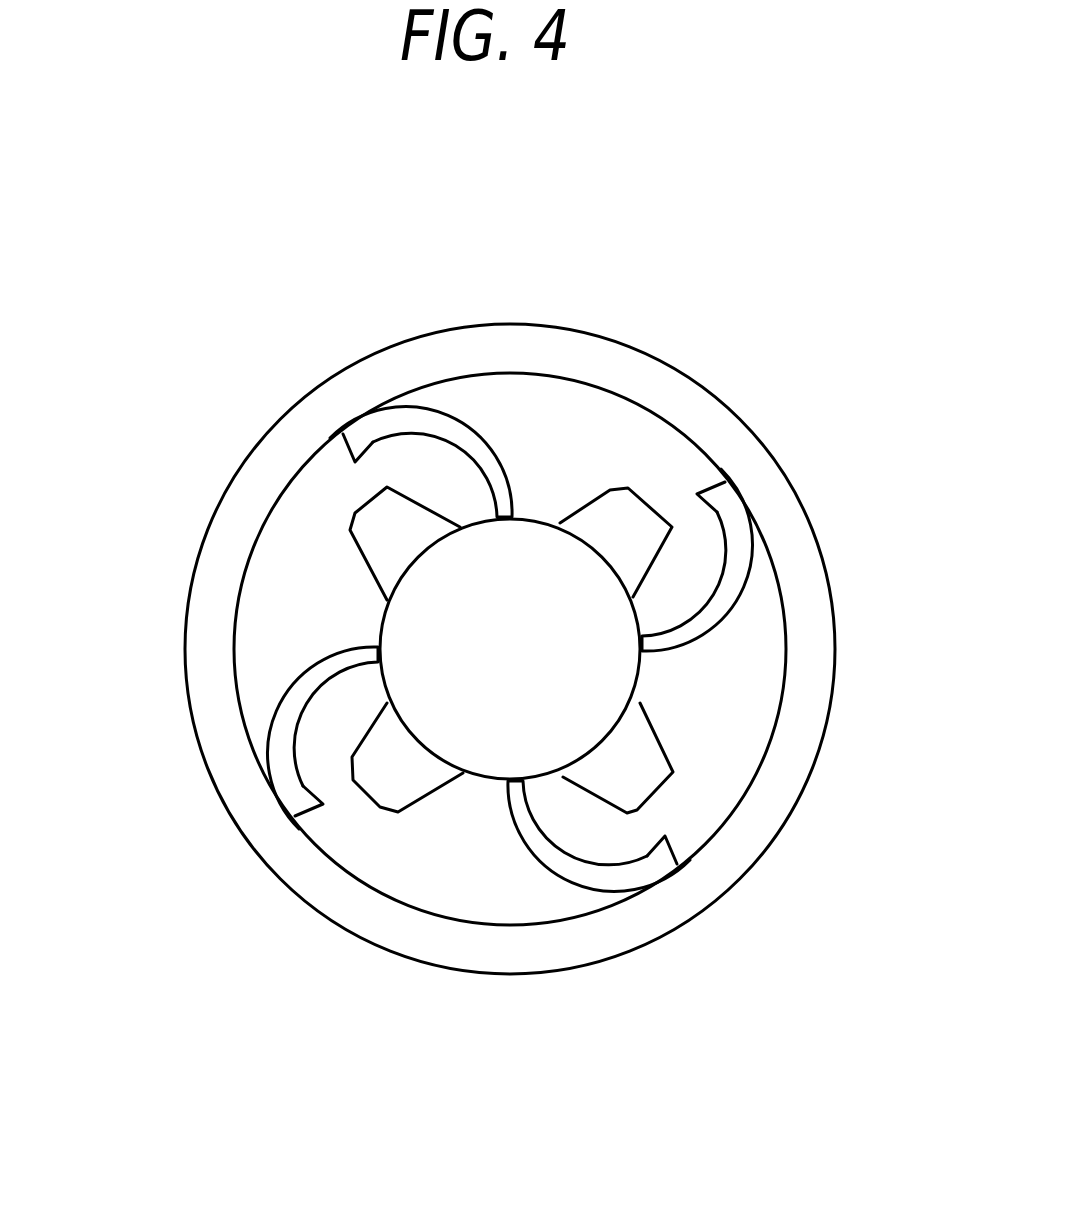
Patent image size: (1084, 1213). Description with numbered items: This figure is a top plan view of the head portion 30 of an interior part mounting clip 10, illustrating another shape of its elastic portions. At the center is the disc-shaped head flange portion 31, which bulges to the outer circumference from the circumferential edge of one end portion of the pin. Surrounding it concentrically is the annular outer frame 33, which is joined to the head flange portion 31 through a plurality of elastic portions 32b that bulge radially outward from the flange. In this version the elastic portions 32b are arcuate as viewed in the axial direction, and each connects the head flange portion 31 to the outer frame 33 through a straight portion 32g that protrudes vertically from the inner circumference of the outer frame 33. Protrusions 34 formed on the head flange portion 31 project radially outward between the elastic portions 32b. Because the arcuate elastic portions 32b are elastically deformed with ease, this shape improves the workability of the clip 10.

The clip 10 is at (783, 334).
The head portion 30 is at (160, 757).
The head flange portion 31 is at (380, 632).
The arcuate elastic portion 32b is at (463, 427).
The straight portion 32g is at (745, 496).
The outer frame 33 is at (836, 647).
The protrusion 34 is at (355, 513).